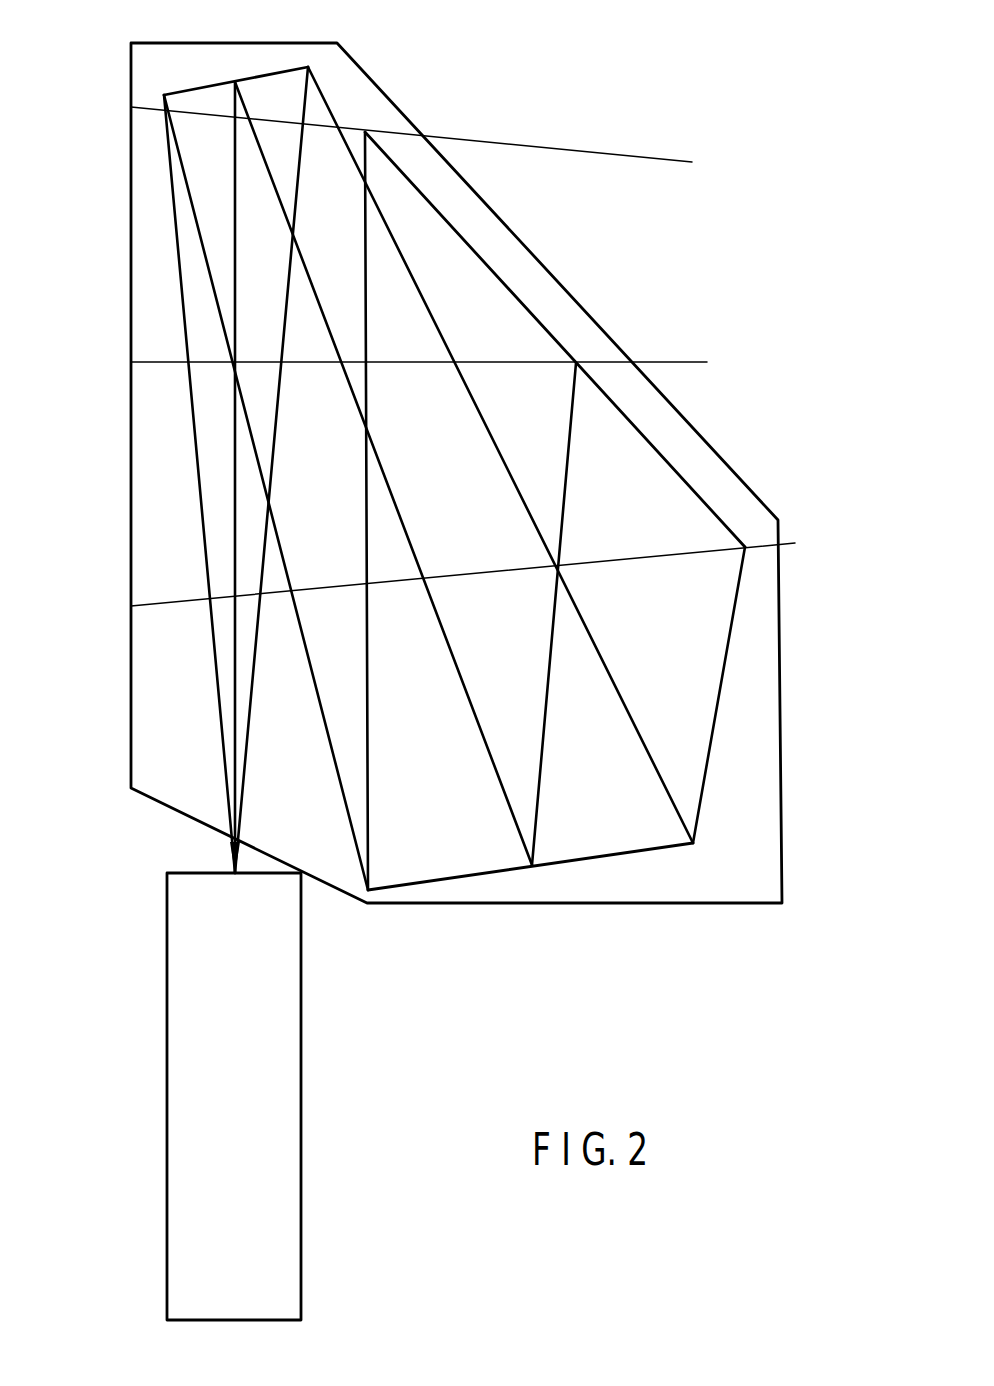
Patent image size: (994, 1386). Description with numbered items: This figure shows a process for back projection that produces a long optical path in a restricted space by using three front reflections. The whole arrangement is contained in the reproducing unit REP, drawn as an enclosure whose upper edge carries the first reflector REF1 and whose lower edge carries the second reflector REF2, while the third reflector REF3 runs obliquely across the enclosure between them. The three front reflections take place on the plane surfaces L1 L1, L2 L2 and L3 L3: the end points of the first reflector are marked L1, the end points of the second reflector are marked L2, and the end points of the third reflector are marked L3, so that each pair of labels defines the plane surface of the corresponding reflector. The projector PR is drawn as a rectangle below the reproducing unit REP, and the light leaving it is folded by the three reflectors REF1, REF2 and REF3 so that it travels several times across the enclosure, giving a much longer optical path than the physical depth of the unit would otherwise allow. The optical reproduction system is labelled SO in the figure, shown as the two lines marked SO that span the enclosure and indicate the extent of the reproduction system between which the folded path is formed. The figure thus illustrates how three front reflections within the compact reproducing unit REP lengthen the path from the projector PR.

The reproducing unit REP is at (126, 190).
The reflector 1 REF1 is at (282, 66).
The reflector 2 REF2 is at (586, 875).
The reflector 3 REF3 is at (695, 468).
The plane surface L1L1 L1 is at (416, 466).
The plane surface L2L2 L2 is at (554, 846).
The plane surface L3L3 L3 is at (560, 495).
The optical reproduction system SO is at (463, 356).
The projector PR is at (234, 1081).